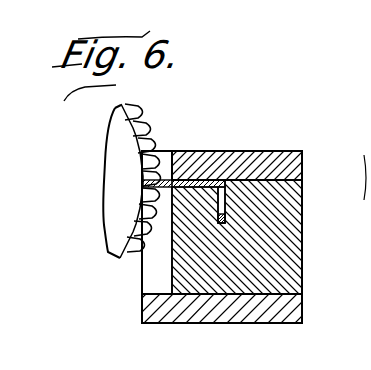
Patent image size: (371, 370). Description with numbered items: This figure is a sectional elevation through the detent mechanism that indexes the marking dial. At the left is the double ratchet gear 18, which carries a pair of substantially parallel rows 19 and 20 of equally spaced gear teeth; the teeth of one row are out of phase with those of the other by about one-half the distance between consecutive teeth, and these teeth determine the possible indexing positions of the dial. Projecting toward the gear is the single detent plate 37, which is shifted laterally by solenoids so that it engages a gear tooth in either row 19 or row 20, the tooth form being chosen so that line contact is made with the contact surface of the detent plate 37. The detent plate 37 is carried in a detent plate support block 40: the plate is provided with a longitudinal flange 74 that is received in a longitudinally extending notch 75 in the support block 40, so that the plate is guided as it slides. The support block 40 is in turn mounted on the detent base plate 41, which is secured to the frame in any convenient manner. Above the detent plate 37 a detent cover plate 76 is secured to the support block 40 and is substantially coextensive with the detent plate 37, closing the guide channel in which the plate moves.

The double ratchet gear 18 is at (113, 207).
The row of gear teeth 19 is at (150, 125).
The row of gear teeth 20 is at (136, 108).
The detent plate 37 is at (196, 182).
The detent plate support block 40 is at (280, 275).
The detent base plate 41 is at (263, 308).
The longitudinal flange 74 is at (224, 205).
The longitudinally extending notch 75 is at (225, 217).
The detent cover plate 76 is at (267, 162).